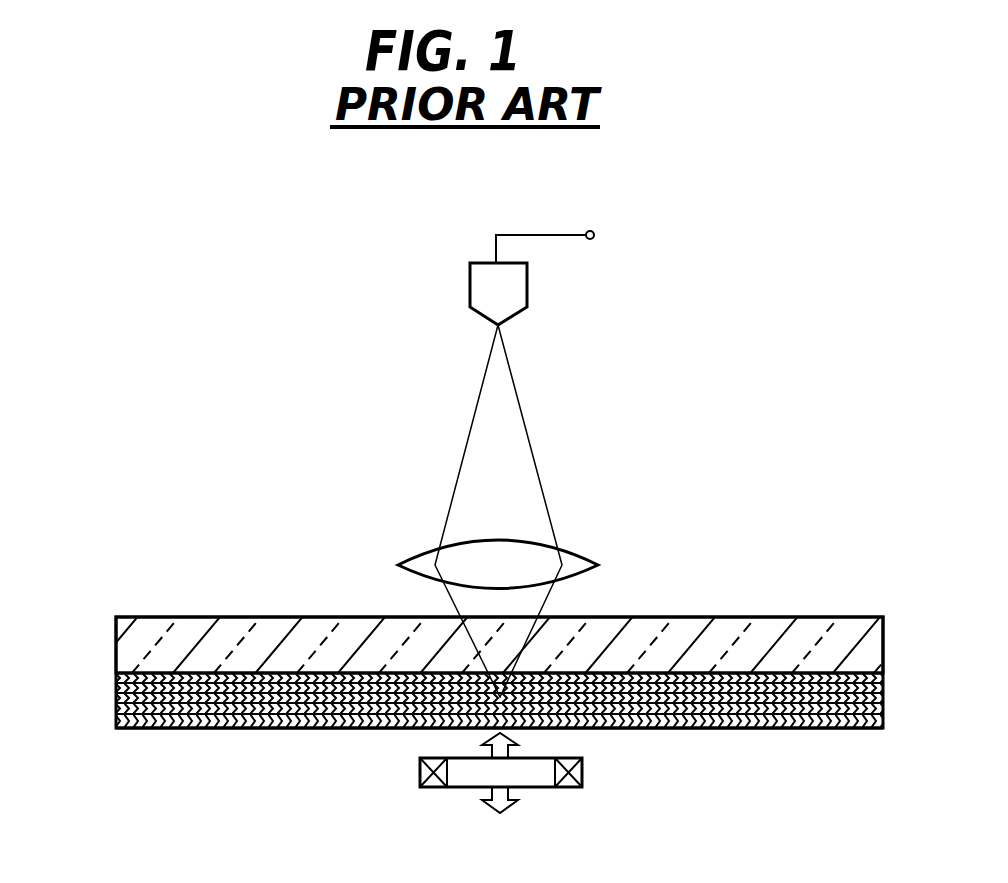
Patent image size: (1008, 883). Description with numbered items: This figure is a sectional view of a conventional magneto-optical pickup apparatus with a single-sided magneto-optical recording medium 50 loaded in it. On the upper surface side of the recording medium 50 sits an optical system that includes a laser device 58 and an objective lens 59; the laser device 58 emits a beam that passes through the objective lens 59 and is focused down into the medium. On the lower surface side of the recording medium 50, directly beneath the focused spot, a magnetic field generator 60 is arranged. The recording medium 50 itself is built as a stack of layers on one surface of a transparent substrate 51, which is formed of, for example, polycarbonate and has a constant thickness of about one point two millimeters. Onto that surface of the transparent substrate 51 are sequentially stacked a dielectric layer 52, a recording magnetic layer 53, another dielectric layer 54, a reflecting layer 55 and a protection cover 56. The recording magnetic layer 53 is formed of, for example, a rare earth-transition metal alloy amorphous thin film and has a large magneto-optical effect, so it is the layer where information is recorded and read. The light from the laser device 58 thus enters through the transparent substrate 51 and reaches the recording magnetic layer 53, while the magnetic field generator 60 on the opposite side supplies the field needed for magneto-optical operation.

The single-sided magneto-optical recording medium 50 is at (479, 644).
The transparent substrate 51 is at (792, 640).
The dielectric layer 52 is at (120, 678).
The recording magnetic layer 53 is at (118, 688).
The dielectric layer 54 is at (118, 698).
The reflecting layer 55 is at (118, 708).
The protection cover 56 is at (130, 727).
The laser device 58 is at (516, 290).
The objective lens 59 is at (575, 562).
The magnetic field generator 60 is at (582, 772).